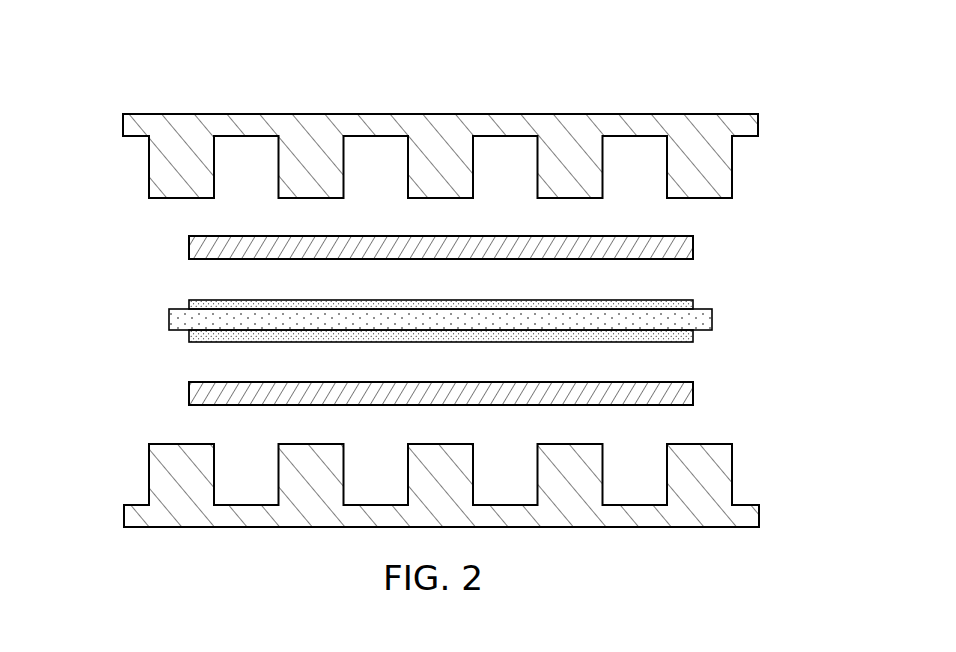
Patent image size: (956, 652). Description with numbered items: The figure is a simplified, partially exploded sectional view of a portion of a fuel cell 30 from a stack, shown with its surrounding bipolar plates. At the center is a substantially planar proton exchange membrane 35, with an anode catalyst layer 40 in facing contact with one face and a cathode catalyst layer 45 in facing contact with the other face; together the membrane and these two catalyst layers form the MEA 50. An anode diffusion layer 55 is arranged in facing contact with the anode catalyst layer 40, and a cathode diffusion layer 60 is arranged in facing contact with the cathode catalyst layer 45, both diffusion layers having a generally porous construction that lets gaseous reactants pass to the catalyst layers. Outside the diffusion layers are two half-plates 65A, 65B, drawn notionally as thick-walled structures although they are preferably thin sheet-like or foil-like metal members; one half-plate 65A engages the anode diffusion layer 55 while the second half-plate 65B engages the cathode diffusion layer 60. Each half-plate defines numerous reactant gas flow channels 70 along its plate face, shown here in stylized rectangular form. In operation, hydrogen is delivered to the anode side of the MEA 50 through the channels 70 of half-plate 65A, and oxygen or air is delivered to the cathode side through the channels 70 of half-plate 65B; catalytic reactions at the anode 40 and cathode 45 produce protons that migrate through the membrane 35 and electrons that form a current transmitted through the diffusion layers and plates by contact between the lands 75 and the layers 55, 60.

The fuel cell 30 is at (594, 88).
The proton exchange membrane 35 is at (169, 319).
The anode catalyst layer 40 is at (189, 302).
The cathode catalyst layer 45 is at (189, 336).
The MEA 50 is at (444, 316).
The anode diffusion layer 55 is at (189, 248).
The cathode diffusion layer 60 is at (189, 393).
The half-plate 65A is at (764, 121).
The half-plate 65B is at (118, 517).
The reactant gas flow channels 70 is at (260, 184).
The lands 75 is at (713, 198).